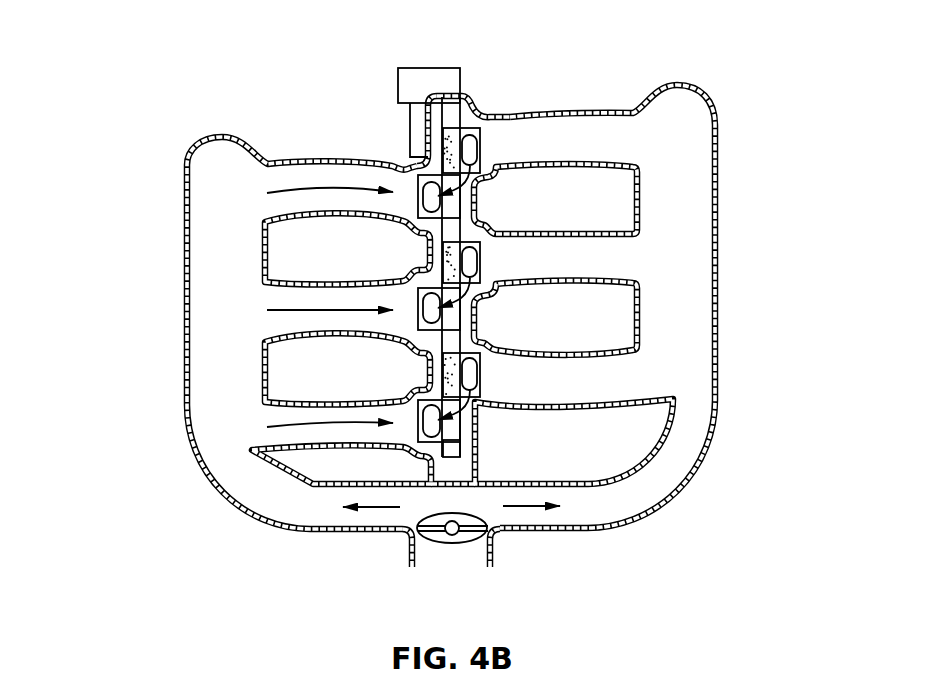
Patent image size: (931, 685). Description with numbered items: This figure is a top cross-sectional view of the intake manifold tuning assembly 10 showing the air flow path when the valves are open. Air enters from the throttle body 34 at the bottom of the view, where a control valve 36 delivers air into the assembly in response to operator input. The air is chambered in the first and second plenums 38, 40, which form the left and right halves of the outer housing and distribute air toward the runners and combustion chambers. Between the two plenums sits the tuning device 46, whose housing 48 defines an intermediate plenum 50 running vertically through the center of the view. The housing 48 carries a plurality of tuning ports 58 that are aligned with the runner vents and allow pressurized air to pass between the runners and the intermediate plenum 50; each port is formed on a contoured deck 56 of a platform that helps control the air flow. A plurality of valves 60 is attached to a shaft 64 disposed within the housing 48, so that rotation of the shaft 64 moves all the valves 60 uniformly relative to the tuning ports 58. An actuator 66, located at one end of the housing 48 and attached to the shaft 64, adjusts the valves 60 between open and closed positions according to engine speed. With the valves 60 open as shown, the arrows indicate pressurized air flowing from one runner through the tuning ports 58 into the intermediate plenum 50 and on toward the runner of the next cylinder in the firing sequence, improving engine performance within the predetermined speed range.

The intake manifold tuning assembly 10 is at (429, 315).
The throttle body 34 is at (508, 563).
The control valve 36 is at (448, 543).
The first plenum 38 is at (182, 303).
The second plenum 40 is at (720, 267).
The tuning device 46 is at (380, 107).
The housing 48 is at (483, 103).
The intermediate plenum 50 is at (457, 468).
The deck 56 is at (426, 181).
The tuning ports 58 is at (468, 142).
The valves 60 is at (447, 362).
The shaft 64 is at (450, 110).
The actuator 66 is at (422, 80).